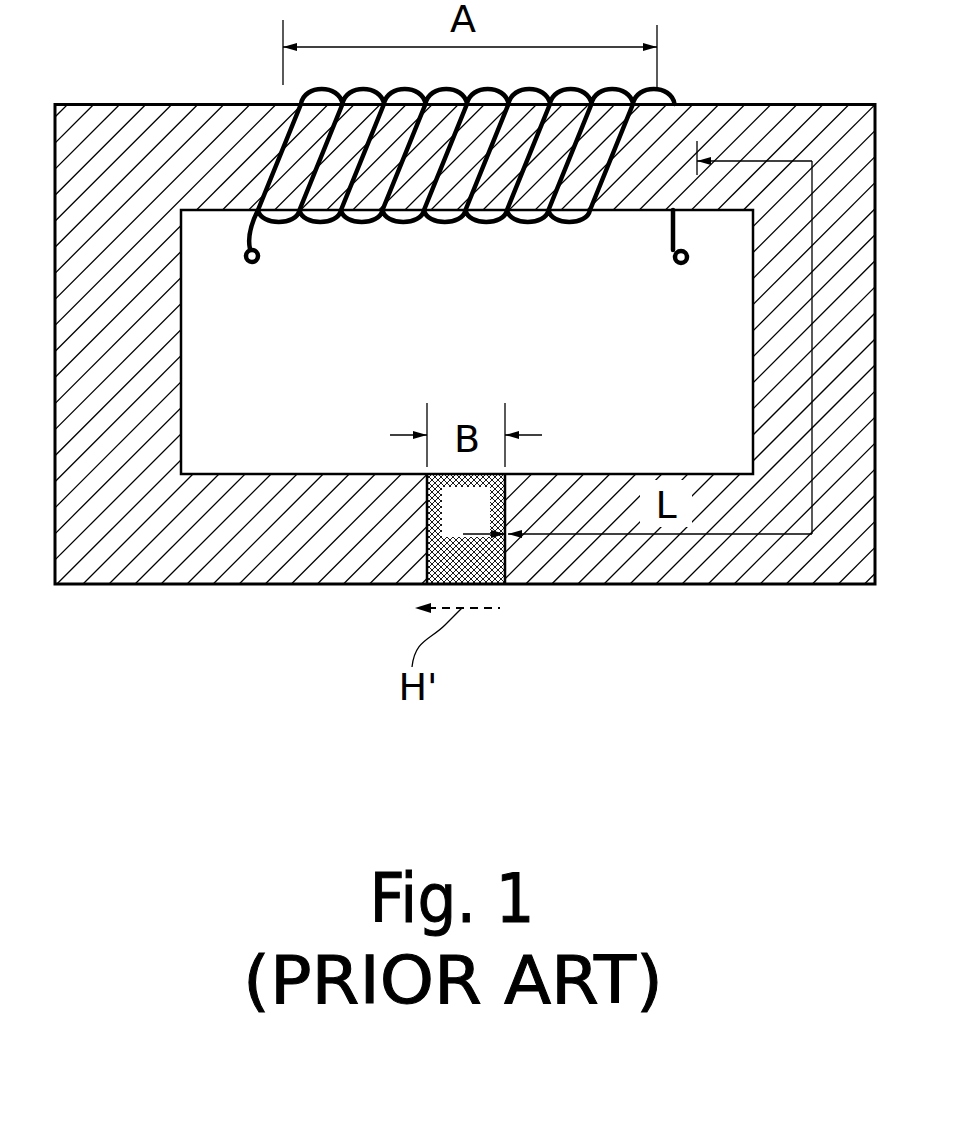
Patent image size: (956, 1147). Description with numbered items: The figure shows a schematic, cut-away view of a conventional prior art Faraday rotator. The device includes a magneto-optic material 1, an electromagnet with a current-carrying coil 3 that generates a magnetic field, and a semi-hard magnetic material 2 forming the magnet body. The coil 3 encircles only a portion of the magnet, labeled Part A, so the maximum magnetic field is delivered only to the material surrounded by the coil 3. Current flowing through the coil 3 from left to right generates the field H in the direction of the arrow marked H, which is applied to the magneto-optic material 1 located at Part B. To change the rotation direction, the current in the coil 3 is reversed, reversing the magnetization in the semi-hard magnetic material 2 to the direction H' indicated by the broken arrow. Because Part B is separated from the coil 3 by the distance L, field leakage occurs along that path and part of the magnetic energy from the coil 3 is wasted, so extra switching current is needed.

The magneto-optic material 1 is at (477, 566).
The semi-hard magnetic material 2 is at (233, 547).
The current-carrying coil 3 is at (250, 228).